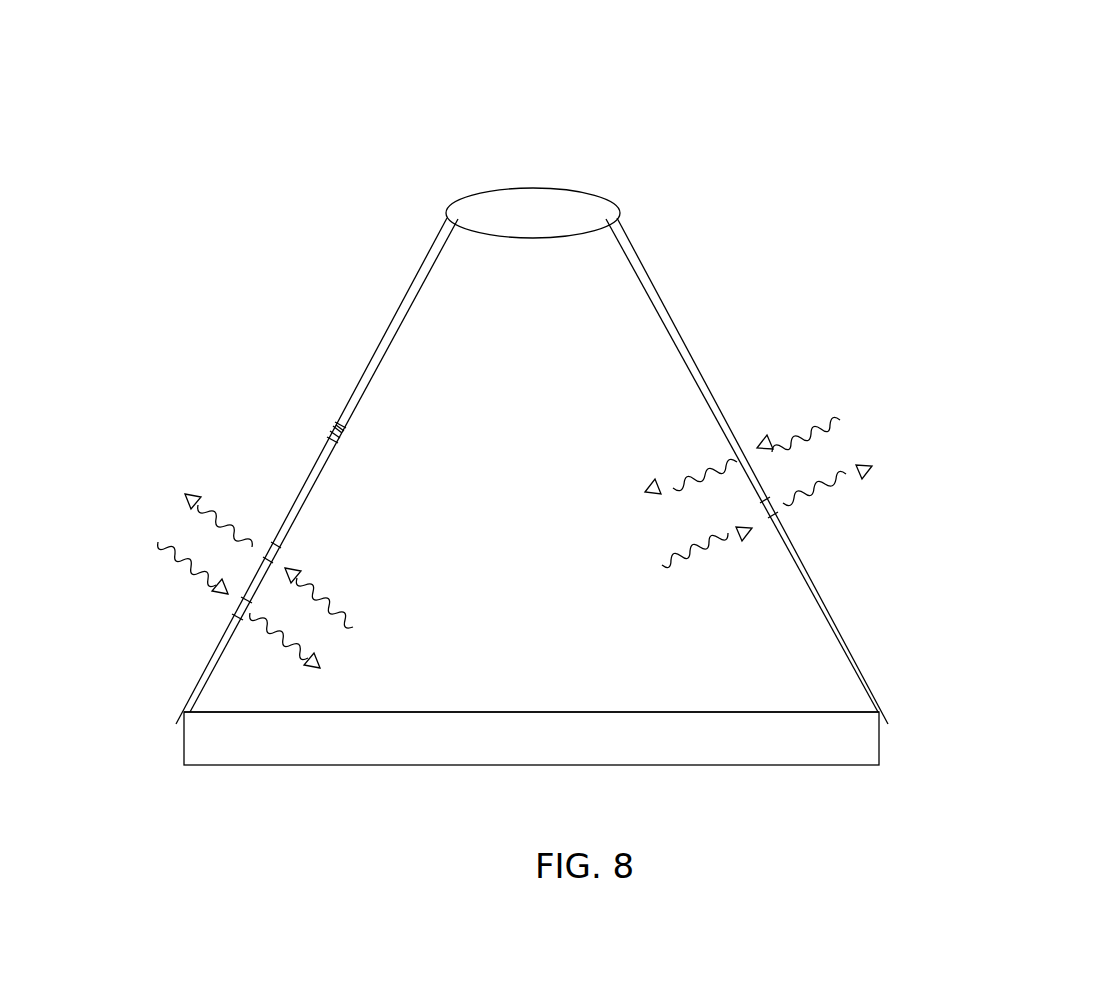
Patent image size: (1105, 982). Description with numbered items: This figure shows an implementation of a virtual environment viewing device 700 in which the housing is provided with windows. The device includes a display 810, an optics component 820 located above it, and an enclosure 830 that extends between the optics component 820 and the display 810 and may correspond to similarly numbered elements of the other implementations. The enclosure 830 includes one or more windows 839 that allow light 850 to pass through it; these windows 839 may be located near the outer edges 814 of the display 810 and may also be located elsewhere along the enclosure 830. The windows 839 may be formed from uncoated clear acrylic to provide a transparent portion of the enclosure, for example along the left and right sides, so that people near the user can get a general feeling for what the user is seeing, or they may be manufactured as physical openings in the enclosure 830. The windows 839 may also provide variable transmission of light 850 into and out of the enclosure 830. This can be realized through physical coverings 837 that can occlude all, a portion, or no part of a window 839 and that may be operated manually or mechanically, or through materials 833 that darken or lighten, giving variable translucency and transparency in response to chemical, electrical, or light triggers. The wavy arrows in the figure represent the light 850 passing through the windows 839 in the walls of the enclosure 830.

The lighting apparatus 700 is at (1033, 87).
The display 810 is at (775, 758).
The outer edges 814 is at (222, 748).
The optics component 820 is at (527, 186).
The enclosure 830 is at (673, 327).
The materials 833 is at (320, 422).
The physical coverings 837 is at (263, 532).
The windows 839 is at (225, 611).
The light 850 is at (837, 408).